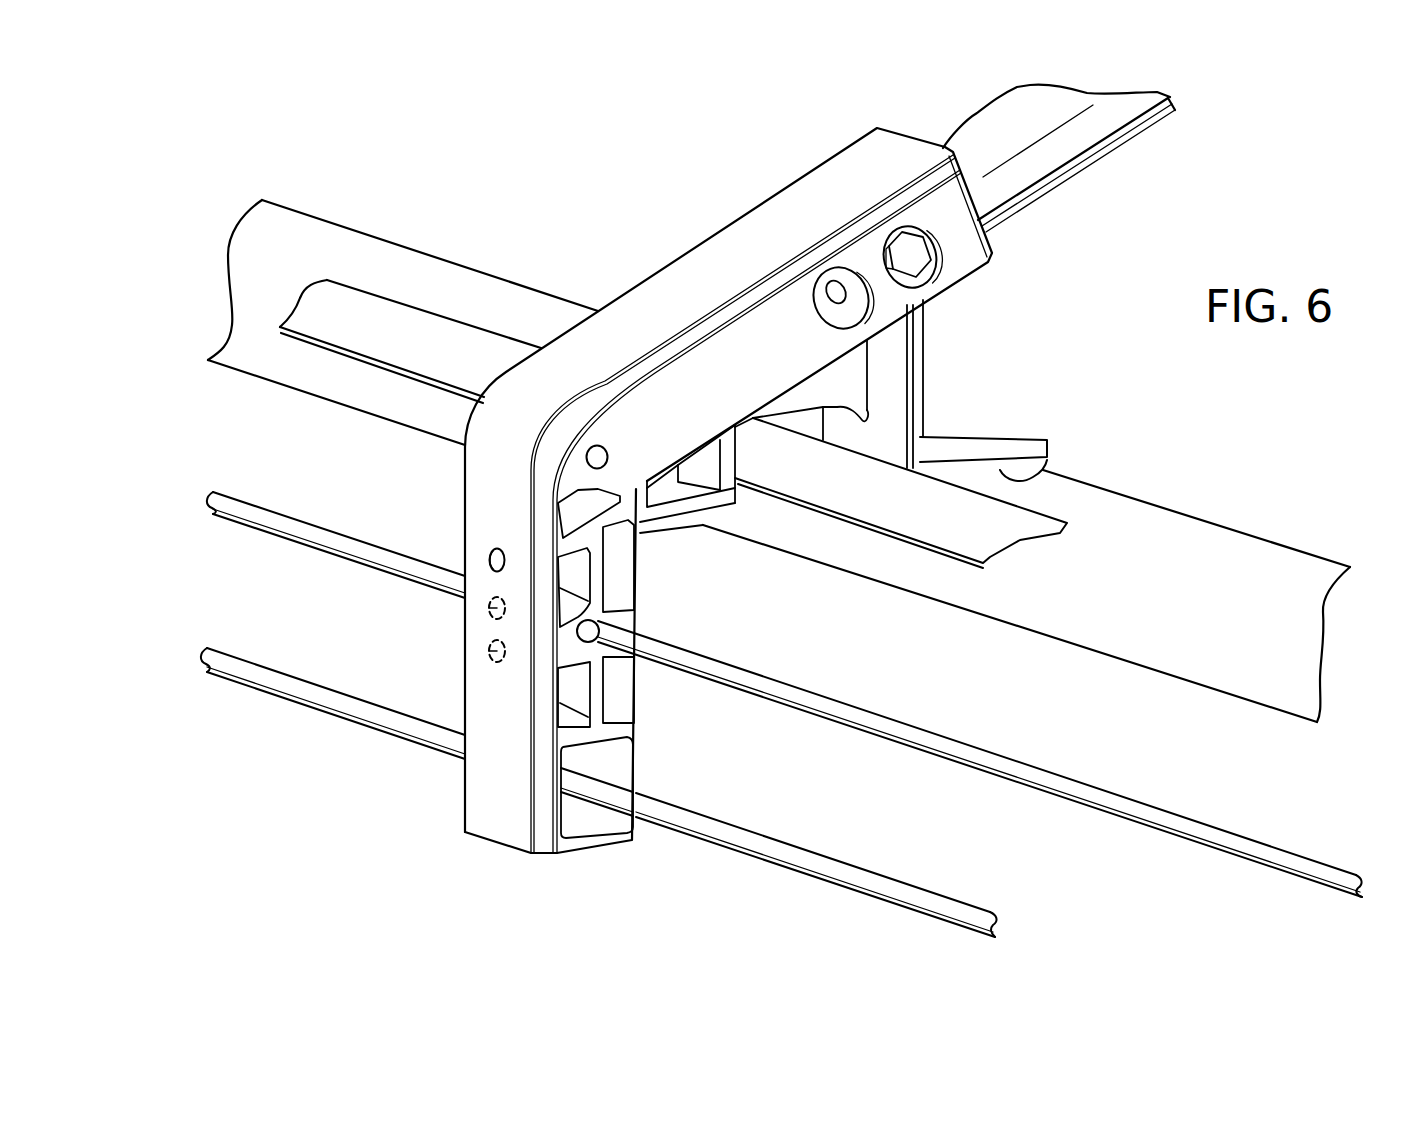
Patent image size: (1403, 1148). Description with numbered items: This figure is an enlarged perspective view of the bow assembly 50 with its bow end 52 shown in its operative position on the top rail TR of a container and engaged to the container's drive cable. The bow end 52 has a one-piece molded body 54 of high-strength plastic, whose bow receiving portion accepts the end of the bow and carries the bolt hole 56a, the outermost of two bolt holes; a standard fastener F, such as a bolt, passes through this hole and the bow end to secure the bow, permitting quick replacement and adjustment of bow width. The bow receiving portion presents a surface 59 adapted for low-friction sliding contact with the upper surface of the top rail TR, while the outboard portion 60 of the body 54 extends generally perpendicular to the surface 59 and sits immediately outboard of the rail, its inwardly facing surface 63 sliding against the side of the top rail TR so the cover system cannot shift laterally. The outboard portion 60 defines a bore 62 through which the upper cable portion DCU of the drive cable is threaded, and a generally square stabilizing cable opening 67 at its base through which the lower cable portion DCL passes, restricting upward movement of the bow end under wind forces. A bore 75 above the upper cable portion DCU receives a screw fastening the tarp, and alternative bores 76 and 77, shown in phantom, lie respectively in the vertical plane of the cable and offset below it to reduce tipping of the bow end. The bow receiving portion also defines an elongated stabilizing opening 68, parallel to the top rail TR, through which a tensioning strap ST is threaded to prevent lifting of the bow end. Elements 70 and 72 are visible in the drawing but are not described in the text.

The bow assembly 50 is at (1097, 146).
The bow end element 52 is at (745, 214).
The one-piece molded body 54 is at (643, 307).
The bolt hole 56a is at (897, 233).
The surface 59 is at (1043, 474).
The outboard portion 60 is at (497, 762).
The bore 62 is at (603, 612).
The inwardly facing surface 63 is at (640, 714).
The stabilizing cable opening 67 is at (580, 815).
The stabilizing opening 68 is at (803, 425).
The vertical web 70 is at (920, 360).
The plate 72 is at (963, 413).
The bore 75 is at (487, 553).
The bore 76 is at (480, 613).
The bore 77 is at (480, 647).
The fastener F is at (917, 260).
The tensioning strap ST is at (382, 325).
The top rail TR is at (1178, 599).
The upper cable portion DCU is at (1068, 787).
The lower cable portion DCL is at (980, 912).